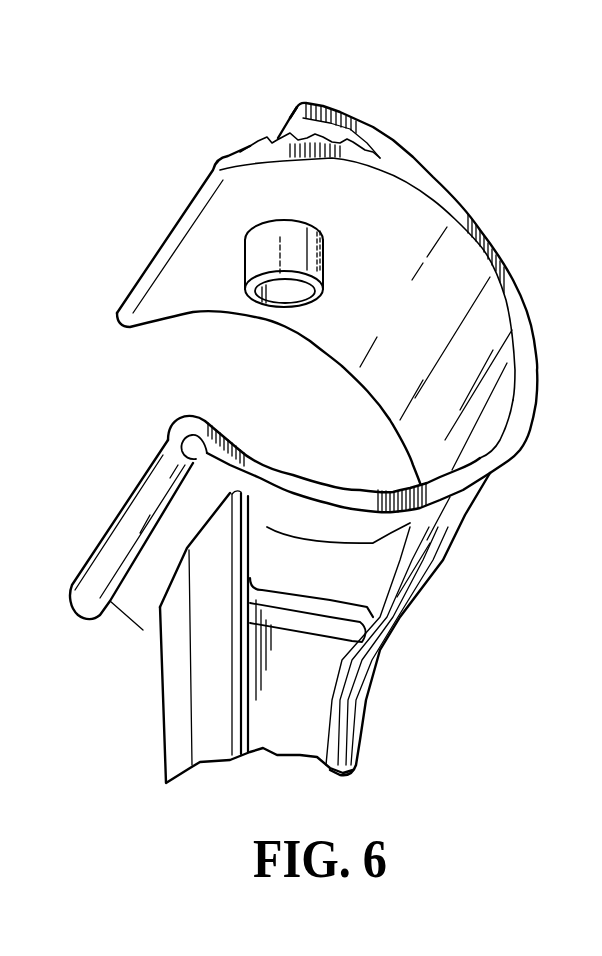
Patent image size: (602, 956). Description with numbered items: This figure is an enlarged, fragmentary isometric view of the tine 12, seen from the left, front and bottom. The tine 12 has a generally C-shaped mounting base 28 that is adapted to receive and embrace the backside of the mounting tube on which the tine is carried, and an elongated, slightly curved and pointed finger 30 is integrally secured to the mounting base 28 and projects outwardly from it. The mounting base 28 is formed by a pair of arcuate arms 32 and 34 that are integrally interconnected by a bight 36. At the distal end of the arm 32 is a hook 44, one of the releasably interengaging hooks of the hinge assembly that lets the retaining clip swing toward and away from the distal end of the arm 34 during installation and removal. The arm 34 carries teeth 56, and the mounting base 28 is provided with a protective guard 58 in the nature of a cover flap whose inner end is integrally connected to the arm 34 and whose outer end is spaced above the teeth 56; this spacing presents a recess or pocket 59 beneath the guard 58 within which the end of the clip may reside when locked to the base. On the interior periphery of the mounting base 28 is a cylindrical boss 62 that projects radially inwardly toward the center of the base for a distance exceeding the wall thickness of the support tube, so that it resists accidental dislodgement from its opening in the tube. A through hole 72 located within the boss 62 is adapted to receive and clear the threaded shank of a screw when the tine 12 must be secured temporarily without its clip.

The tine 12 is at (331, 393).
The mounting base 28 is at (539, 340).
The finger 30 is at (173, 700).
The arcuate arm 32 is at (243, 463).
The arcuate arm 34 is at (421, 180).
The bight 36 is at (518, 400).
The hook 44 is at (112, 590).
The teeth 56 is at (273, 133).
The protective guard 58 is at (341, 119).
The pocket 59 is at (290, 123).
The boss 62 is at (315, 301).
The through hole 72 is at (281, 298).